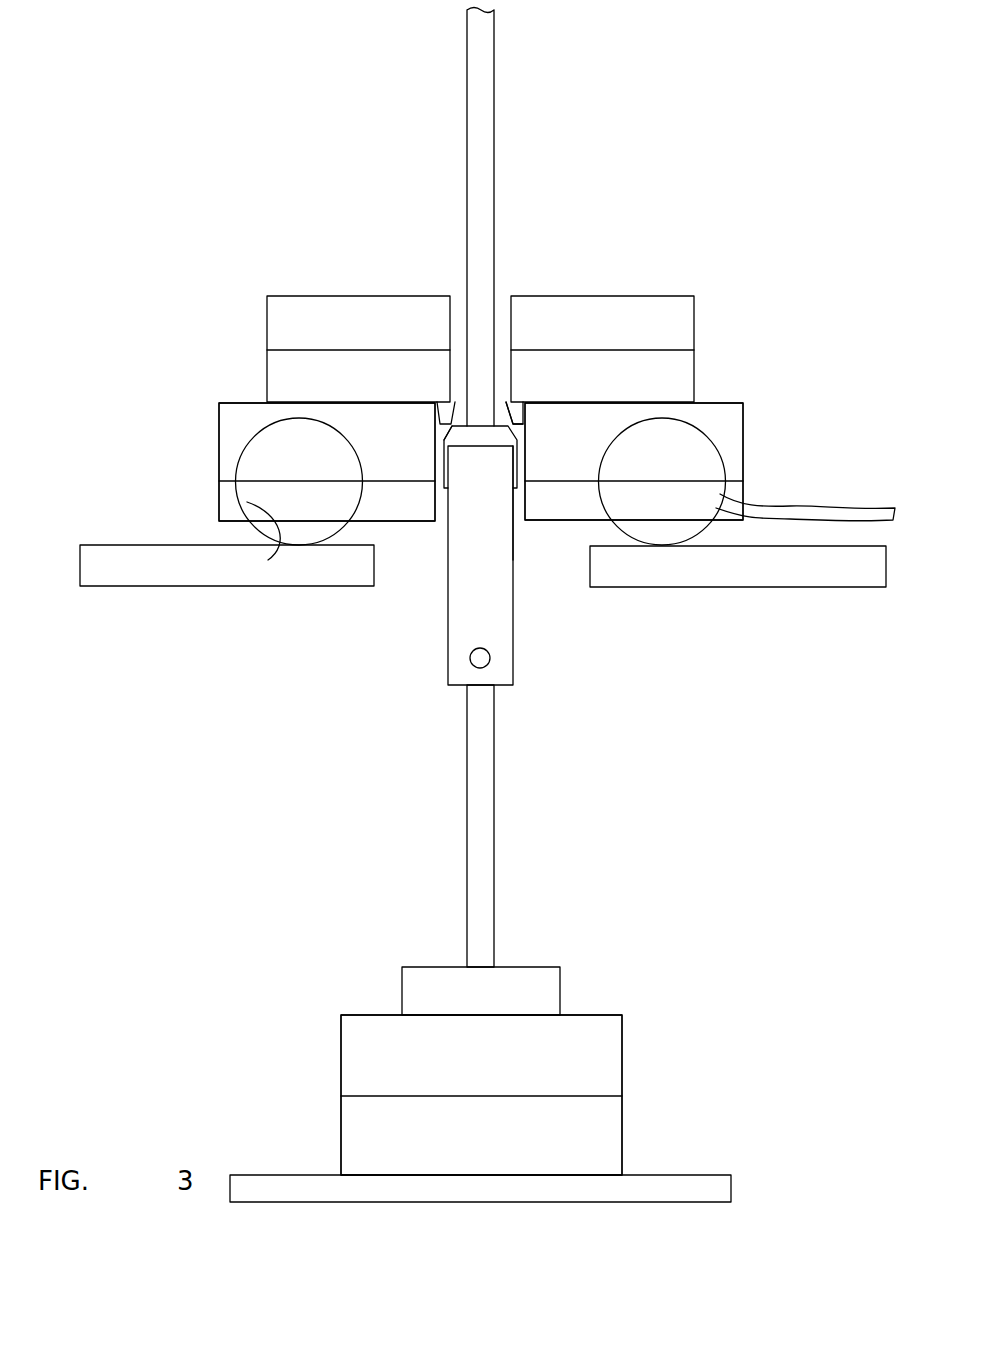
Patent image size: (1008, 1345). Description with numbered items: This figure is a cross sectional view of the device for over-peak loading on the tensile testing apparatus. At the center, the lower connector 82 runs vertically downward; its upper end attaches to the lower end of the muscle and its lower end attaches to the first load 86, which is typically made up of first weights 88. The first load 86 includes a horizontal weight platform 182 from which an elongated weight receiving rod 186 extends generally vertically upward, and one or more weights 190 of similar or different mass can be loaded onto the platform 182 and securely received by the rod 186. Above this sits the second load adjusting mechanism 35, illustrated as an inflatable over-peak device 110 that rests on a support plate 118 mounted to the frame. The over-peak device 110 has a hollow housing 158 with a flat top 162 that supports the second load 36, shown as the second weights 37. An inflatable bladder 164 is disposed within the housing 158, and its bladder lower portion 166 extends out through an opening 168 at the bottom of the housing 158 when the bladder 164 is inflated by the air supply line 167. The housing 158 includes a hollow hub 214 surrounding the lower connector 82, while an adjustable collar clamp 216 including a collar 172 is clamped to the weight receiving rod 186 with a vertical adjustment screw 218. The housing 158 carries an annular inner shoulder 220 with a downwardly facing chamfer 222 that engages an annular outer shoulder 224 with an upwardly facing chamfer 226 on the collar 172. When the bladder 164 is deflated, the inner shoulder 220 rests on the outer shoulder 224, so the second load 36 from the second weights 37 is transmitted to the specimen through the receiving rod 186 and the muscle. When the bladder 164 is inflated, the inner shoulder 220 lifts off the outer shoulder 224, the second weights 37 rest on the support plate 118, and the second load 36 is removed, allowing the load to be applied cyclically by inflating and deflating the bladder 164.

The lower connector 82 is at (495, 78).
The second load 36 is at (330, 262).
The second weights 37 is at (602, 296).
The annular inner shoulder 220 is at (515, 413).
The downwardly facing chamfer 222 is at (497, 413).
The collar 172 is at (523, 427).
The annular outer shoulder 224 is at (452, 445).
The upwardly facing chamfer 226 is at (452, 440).
The bladder lower portion 166 is at (347, 528).
The inflatable bladder 164 is at (270, 460).
The opening 168 is at (268, 560).
The hollow housing 158 is at (745, 428).
The flat top 162 is at (713, 403).
The inflatable over-peak device 110 is at (793, 474).
The air supply line 167 is at (838, 500).
The support plate 118 is at (773, 585).
The adjustable collar clamp 216 is at (513, 612).
The hollow hub 214 is at (524, 507).
The vertical adjustment screw 218 is at (470, 664).
The second load adjusting mechanism 35 is at (238, 676).
The weight receiving rod 186 is at (467, 850).
The weights 190 is at (587, 1013).
The first weights 88 is at (341, 1055).
The first load 86 is at (638, 1046).
The horizontal weight platform 182 is at (662, 1177).